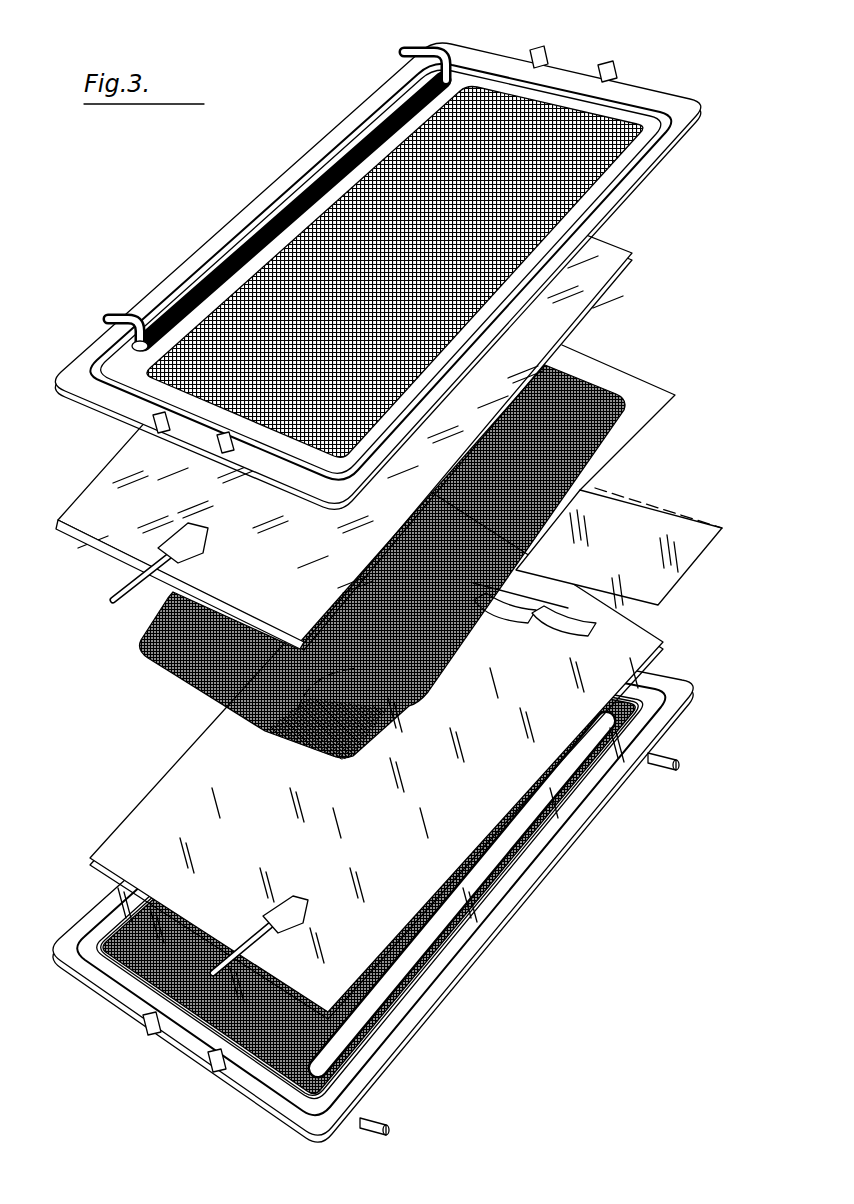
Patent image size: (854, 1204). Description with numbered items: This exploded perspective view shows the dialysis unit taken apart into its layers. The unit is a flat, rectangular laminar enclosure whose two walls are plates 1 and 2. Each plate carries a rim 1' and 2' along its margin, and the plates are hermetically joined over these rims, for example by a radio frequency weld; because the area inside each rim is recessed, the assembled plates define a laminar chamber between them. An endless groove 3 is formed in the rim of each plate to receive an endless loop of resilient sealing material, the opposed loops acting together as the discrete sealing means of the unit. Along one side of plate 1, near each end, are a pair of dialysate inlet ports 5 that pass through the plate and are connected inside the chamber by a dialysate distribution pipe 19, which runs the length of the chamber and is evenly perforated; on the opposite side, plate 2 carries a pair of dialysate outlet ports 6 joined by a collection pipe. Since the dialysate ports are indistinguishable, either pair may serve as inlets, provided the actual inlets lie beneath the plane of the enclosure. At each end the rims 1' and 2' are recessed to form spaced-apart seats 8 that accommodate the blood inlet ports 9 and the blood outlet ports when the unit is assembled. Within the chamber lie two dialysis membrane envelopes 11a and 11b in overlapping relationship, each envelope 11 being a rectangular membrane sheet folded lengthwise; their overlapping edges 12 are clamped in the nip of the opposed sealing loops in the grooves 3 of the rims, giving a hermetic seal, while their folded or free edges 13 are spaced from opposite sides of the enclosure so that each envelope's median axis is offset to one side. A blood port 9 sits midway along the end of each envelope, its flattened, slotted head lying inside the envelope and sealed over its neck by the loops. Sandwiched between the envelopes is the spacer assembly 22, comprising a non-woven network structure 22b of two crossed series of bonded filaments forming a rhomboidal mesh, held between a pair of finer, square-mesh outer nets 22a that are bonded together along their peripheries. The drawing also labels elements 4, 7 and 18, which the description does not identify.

The plate 1 is at (373, 885).
The rim 1' is at (705, 697).
The plate 2 is at (377, 276).
The rim 2' is at (399, 271).
The endless groove 3 is at (210, 237).
The mesh screen 4 is at (565, 153).
The dialysate inlet ports 5 is at (670, 757).
The dialysate outlet ports 6 is at (396, 46).
The distribution tube 7 is at (393, 107).
The seats 8 is at (524, 60).
The blood inlet ports 9 is at (100, 595).
The absorber plate 11 is at (623, 395).
The dialysis membrane envelope 11a is at (110, 513).
The dialysis membrane envelope 11b is at (693, 473).
The overlapping edges 12 is at (50, 517).
The folded or free edges 13 is at (105, 823).
The absorber layer 18 is at (448, 927).
The dialysate distribution pipe 19 is at (452, 900).
The spacer assembly 22 is at (133, 640).
The outer nets 22a is at (203, 677).
The non-woven network structure 22b is at (257, 710).